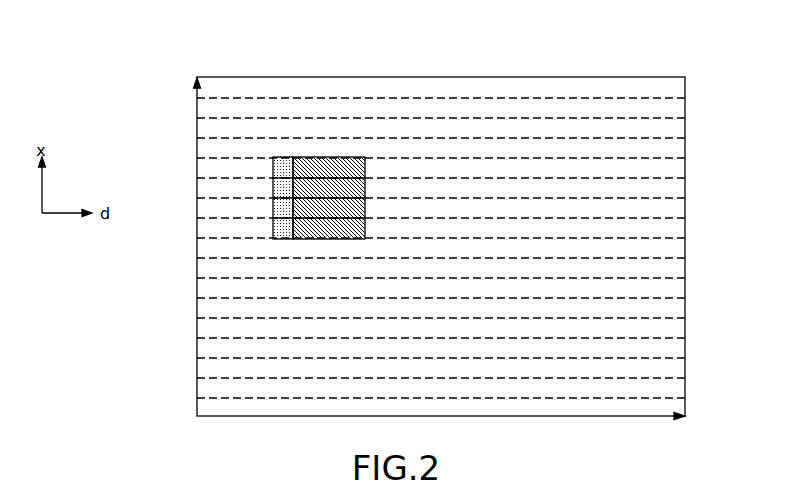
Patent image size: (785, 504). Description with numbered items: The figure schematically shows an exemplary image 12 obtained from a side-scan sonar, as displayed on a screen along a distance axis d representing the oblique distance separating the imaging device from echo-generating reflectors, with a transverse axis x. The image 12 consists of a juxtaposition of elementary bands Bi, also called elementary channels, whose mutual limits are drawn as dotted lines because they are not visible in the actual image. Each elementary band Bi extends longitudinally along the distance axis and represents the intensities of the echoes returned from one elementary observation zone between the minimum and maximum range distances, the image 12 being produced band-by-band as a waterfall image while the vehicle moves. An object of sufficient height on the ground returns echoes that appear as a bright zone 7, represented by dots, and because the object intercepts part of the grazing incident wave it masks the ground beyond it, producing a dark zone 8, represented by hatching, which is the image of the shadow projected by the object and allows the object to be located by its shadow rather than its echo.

The image 12 is at (300, 77).
The elementary band Bi is at (673, 229).
The bright zone 7 is at (272, 191).
The dark zone 8 is at (316, 239).